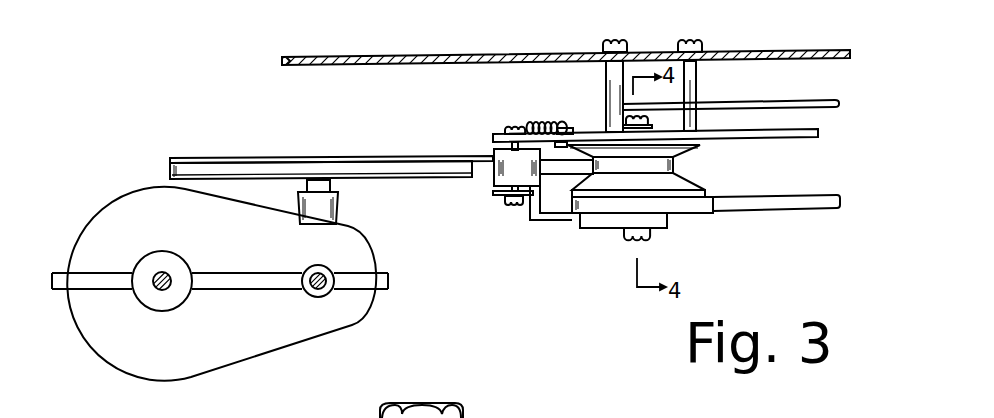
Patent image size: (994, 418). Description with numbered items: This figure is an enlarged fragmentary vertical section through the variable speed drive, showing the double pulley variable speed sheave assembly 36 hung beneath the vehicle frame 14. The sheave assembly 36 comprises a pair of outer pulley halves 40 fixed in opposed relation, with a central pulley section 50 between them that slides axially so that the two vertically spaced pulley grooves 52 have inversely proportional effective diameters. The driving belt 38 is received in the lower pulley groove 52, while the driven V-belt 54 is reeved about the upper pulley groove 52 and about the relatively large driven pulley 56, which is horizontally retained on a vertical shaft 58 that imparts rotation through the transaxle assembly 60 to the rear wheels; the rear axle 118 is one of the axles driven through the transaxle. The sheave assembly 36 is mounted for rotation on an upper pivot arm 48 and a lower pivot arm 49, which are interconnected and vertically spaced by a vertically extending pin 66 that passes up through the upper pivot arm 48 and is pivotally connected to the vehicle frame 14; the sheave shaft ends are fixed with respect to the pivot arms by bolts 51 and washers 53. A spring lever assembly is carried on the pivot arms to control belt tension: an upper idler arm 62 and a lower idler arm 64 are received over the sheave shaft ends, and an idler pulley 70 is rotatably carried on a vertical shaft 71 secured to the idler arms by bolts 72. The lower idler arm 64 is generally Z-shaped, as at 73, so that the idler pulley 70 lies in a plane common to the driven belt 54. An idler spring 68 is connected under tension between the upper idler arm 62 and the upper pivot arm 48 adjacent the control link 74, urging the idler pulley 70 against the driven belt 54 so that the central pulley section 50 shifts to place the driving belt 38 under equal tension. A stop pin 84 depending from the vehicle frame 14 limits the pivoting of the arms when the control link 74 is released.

The vehicle frame 14 is at (753, 50).
The variable speed sheave assembly 36 is at (829, 174).
The driving belt 38 is at (789, 204).
The outer pulley halves 40 is at (692, 222).
The upper pivot arm 48 is at (697, 128).
The lower pivot arm 49 is at (608, 226).
The central pulley section 50 is at (688, 186).
The bolts 51 is at (625, 118).
The pulley grooves 52 is at (752, 164).
The washers 53 is at (373, 417).
The driven V-belt 54 is at (481, 160).
The driven pulley 56 is at (216, 157).
The vertical shaft 58 is at (332, 186).
The transaxle assembly 60 is at (170, 344).
The upper idler arm 62 is at (492, 133).
The lower idler arm 64 is at (544, 218).
The pin 66 is at (618, 39).
The idler spring 68 is at (555, 121).
The idler pulley 70 is at (493, 183).
The vertical shaft 71 is at (500, 193).
The bolts 72 is at (516, 126).
The Z-shaped portion 73 is at (529, 224).
The control link 74 is at (811, 100).
The stop pin 84 is at (699, 39).
The rear axle 118 is at (158, 285).